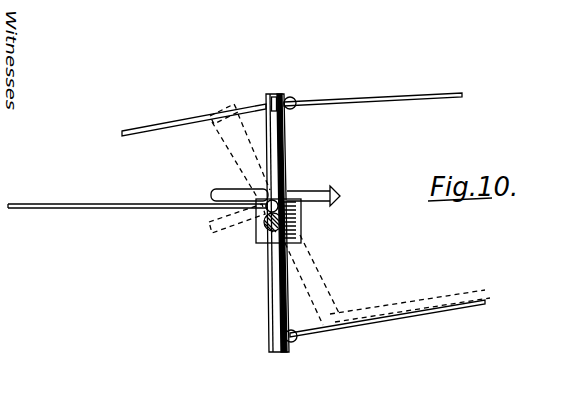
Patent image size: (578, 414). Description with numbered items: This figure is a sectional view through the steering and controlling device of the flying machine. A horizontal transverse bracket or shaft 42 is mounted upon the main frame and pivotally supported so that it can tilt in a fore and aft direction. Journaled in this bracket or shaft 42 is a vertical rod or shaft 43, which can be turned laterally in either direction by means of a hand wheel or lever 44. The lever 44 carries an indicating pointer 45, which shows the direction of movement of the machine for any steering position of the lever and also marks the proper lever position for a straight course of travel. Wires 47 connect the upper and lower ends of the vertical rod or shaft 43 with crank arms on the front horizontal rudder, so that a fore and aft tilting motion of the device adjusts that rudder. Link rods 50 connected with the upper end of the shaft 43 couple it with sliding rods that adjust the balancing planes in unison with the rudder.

The bracket or shaft 42 is at (302, 217).
The vertical rod or shaft 43 is at (282, 152).
The hand wheel or lever 44 is at (220, 190).
The indicating pointer 45 is at (332, 190).
The wires 47 is at (405, 102).
The link rods 50 is at (188, 121).